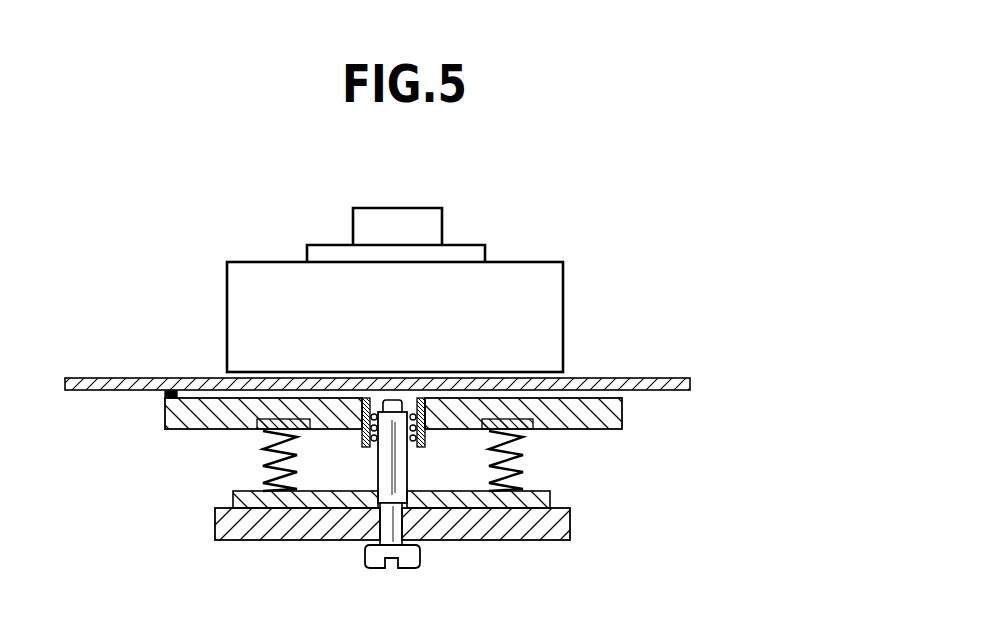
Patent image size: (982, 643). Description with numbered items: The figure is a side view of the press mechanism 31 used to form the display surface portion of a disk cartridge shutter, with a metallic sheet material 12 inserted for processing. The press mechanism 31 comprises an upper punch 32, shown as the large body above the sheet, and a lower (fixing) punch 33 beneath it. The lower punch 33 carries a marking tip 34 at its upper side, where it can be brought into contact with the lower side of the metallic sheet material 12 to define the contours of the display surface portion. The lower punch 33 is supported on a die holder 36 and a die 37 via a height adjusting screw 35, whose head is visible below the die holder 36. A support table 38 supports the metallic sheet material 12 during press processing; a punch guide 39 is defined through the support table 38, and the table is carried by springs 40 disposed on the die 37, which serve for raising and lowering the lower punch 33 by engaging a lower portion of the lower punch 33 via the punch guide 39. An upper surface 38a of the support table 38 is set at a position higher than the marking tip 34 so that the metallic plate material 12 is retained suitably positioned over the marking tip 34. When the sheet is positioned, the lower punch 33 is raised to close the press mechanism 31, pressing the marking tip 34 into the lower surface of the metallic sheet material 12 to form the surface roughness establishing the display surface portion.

The metallic sheet material 12 is at (137, 378).
The press mechanism 31 is at (758, 330).
The upper punch 32 is at (573, 313).
The lower punch 33 is at (420, 467).
The marking tip 34 is at (405, 392).
The height adjusting screw 35 is at (401, 526).
The die holder 36 is at (353, 530).
The die 37 is at (342, 494).
The support table 38 is at (205, 430).
The upper surface of the support table 38a is at (165, 396).
The punch guide 39 is at (362, 442).
The springs 40 is at (521, 478).